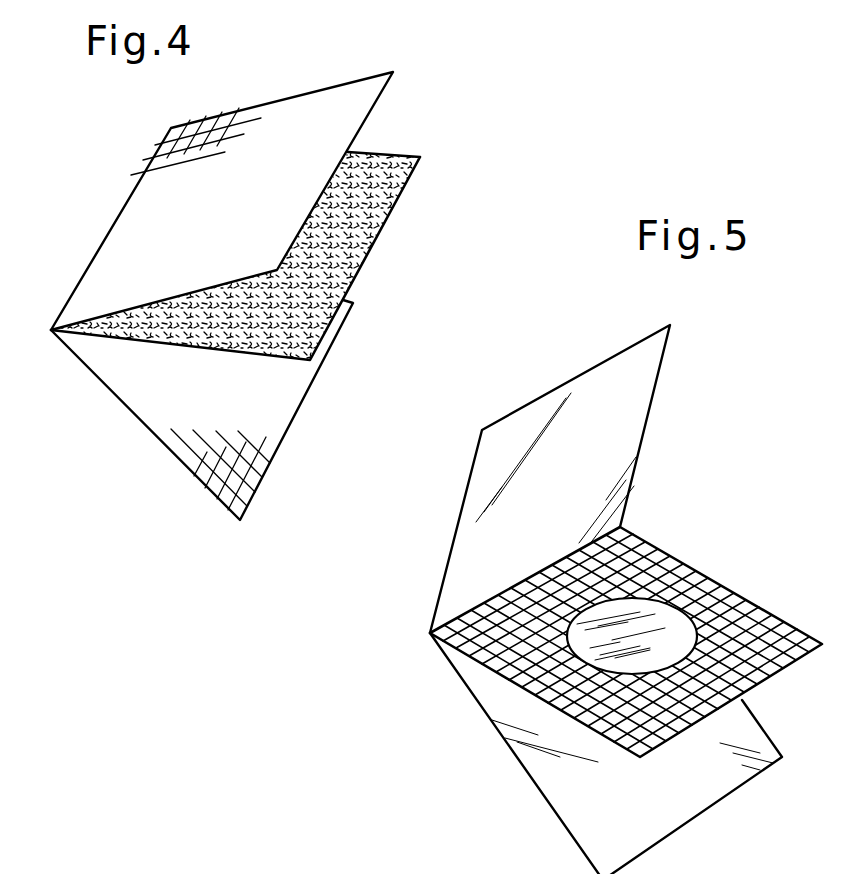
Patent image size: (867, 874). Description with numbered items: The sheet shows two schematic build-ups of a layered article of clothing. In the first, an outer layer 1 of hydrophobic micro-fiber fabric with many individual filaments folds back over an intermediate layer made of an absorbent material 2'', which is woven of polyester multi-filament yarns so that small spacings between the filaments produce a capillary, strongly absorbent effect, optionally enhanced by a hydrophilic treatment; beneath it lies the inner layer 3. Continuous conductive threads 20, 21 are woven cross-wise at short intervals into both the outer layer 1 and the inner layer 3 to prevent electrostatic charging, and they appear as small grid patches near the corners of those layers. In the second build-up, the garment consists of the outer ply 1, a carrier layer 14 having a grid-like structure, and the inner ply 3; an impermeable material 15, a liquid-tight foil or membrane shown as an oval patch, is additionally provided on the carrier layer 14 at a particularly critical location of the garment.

In FIG. 4, the outer layer 1 is at (395, 73).
In FIG. 5, the outer layer 1 is at (608, 363).
In FIG. 4, the absorbent material 2'' is at (274, 256).
In FIG. 4, the inner layer 3 is at (283, 417).
In FIG. 5, the inner layer 3 is at (720, 783).
In FIG. 4, the conductive thread 20 is at (163, 170).
In FIG. 4, the conductive thread 21 is at (248, 117).
In FIG. 5, the carrier layer 14 is at (657, 547).
In FIG. 5, the impermeable material 15 is at (668, 617).